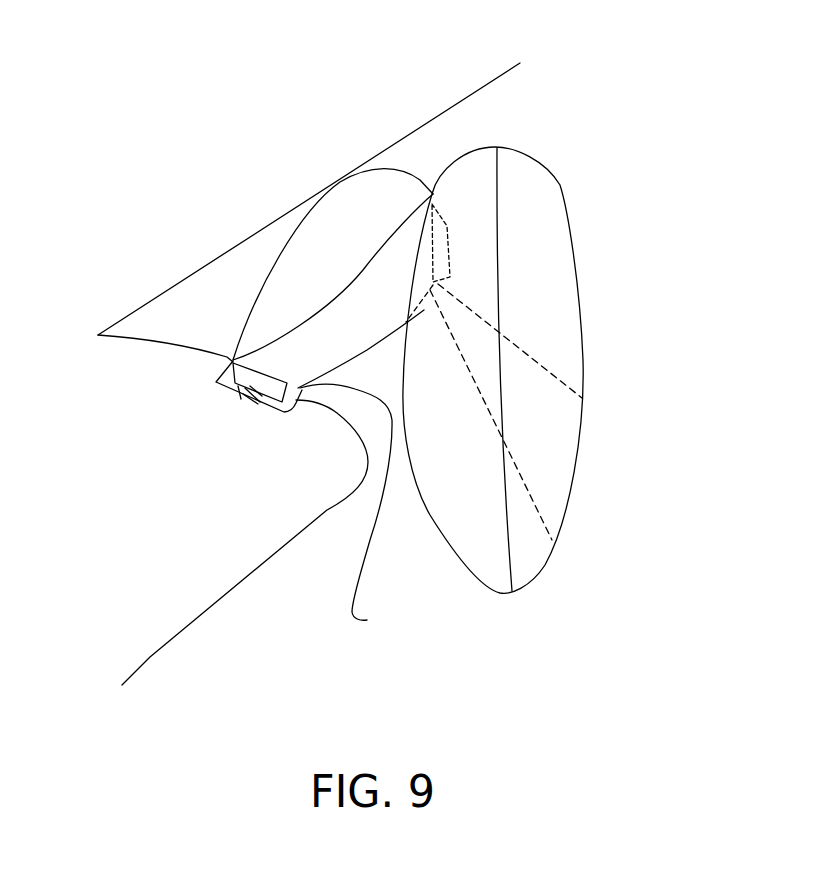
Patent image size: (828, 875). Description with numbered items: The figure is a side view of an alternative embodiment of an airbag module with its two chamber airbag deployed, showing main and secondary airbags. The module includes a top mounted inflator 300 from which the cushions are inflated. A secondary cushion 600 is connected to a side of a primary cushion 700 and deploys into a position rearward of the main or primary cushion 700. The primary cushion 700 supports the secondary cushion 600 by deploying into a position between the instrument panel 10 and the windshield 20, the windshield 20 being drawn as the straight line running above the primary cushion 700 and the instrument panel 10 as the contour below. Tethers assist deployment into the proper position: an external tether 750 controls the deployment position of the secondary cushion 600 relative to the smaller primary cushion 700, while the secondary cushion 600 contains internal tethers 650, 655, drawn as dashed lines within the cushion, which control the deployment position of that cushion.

The instrument panel 10 is at (193, 618).
The windshield 20 is at (470, 92).
The inflator 300 is at (233, 360).
The secondary cushion 600 is at (543, 227).
The internal tether 650 is at (550, 363).
The internal tether 655 is at (528, 488).
The primary cushion 700 is at (330, 227).
The external tether 750 is at (364, 507).